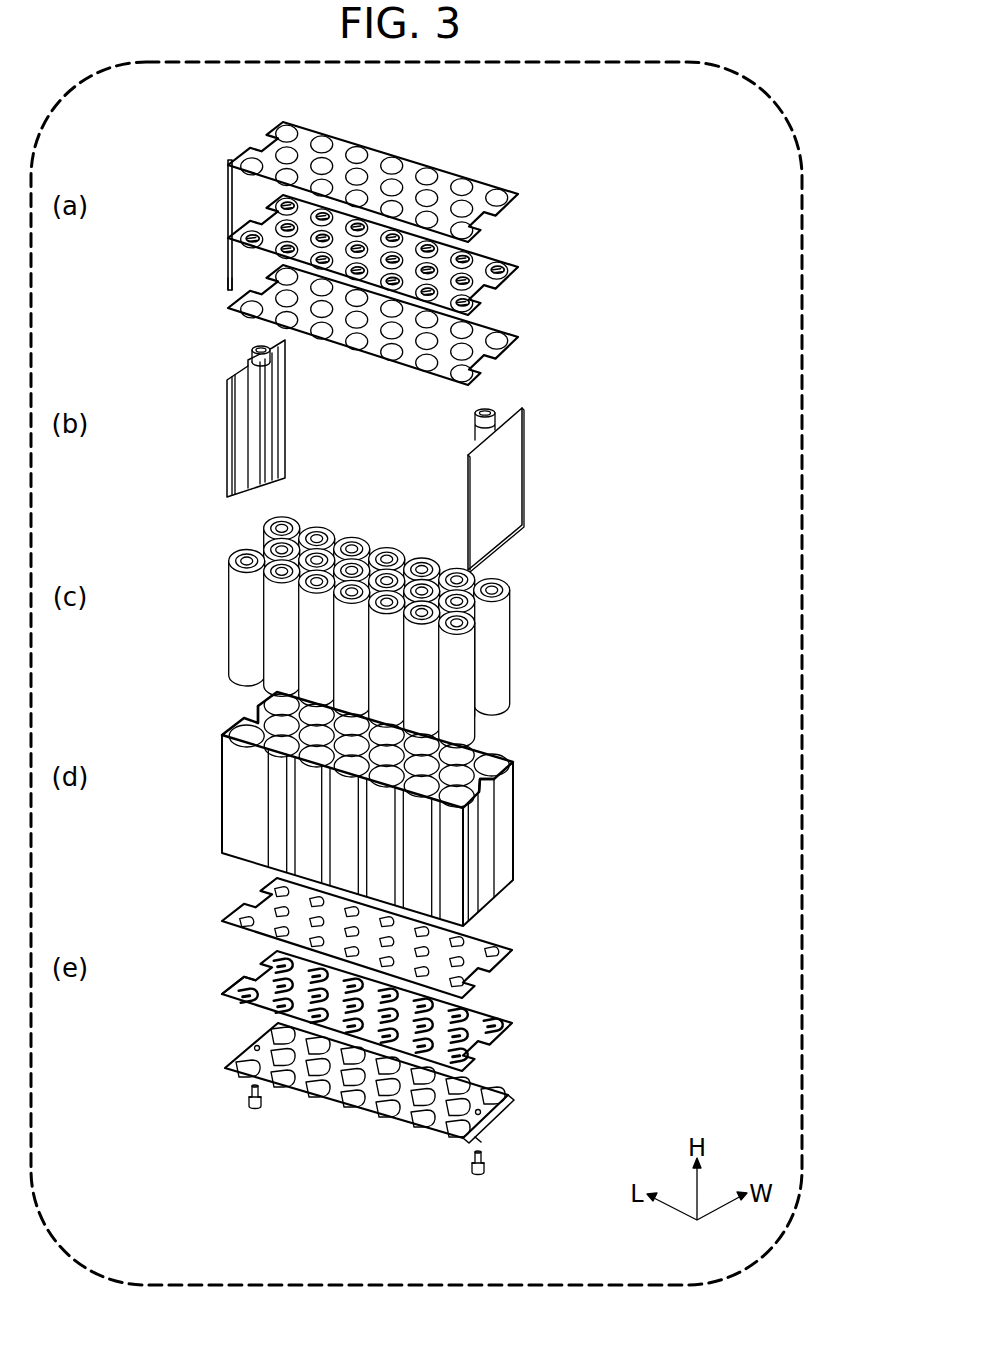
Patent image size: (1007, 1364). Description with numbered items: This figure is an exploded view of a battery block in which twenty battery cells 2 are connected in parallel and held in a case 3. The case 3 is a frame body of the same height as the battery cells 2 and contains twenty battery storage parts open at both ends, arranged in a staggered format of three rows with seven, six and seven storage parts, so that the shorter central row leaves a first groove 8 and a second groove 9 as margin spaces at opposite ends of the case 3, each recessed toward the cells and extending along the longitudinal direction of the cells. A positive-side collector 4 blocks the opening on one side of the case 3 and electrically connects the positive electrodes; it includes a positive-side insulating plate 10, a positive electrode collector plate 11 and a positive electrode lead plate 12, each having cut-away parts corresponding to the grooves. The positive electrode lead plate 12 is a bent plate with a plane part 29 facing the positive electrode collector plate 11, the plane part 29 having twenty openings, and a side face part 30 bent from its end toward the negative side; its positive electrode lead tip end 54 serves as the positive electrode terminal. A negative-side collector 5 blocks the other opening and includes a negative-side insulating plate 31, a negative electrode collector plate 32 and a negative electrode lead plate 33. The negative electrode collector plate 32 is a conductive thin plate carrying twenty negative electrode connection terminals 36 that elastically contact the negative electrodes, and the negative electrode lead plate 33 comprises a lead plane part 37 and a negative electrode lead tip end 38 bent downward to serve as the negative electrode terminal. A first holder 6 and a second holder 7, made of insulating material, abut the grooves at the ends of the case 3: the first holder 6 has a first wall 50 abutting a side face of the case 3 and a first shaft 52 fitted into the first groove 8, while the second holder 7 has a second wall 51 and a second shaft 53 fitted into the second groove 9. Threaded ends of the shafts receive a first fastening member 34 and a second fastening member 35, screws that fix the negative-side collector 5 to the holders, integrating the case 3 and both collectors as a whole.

The battery cell 2 is at (493, 657).
The case 3 is at (503, 827).
The positive-side collector 4 is at (590, 235).
The negative-side collector 5 is at (578, 975).
The first holder 6 is at (402, 437).
The second holder 7 is at (338, 400).
The first groove 8 is at (486, 787).
The second groove 9 is at (254, 721).
The positive-side insulating plate 10 is at (512, 338).
The positive electrode collector plate 11 is at (512, 268).
The positive electrode lead plate 12 is at (502, 208).
The plane part 29 is at (308, 131).
The side face part 30 is at (228, 212).
The negative-side insulating plate 31 is at (515, 952).
The negative electrode collector plate 32 is at (513, 1021).
The negative electrode lead plate 33 is at (513, 1085).
The first fastening member 34 is at (478, 1175).
The second fastening member 35 is at (255, 1108).
The negative electrode connection terminal 36 is at (233, 1008).
The lead plane part 37 is at (508, 1107).
The negative electrode lead tip end 38 is at (488, 1131).
The first wall 50 is at (467, 500).
The second wall 51 is at (242, 452).
The first shaft 52 is at (477, 430).
The second shaft 53 is at (273, 405).
The positive electrode lead tip end 54 is at (230, 290).